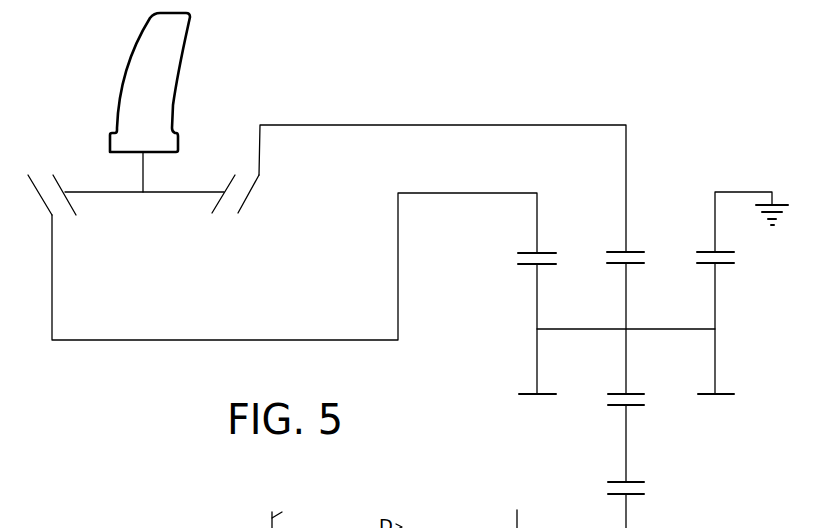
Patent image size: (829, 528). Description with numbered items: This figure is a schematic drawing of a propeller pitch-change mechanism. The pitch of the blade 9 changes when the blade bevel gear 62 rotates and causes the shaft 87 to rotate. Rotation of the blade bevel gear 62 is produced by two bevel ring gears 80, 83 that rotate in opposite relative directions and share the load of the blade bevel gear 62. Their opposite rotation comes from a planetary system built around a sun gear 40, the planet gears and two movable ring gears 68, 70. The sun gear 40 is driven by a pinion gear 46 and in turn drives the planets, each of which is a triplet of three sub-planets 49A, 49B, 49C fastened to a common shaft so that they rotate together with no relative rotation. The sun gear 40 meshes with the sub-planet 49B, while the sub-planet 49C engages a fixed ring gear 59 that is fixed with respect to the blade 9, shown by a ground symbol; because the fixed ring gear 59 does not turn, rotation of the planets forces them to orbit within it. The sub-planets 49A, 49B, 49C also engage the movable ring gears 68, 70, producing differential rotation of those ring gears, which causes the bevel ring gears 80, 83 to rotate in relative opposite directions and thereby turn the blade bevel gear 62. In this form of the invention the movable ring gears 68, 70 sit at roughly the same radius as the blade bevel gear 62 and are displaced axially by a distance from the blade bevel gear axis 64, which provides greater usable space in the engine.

The blade 9 is at (155, 92).
The shaft 87 is at (143, 173).
The blade bevel gear 62 is at (200, 192).
The bevel ring gear 80 is at (30, 178).
The bevel ring gear 83 is at (250, 189).
The movable ring gear 68 is at (545, 250).
The movable ring gear 70 is at (635, 250).
The fixed ring gear 59 is at (720, 252).
The sub-planet 49A is at (537, 297).
The sub-planet 49B is at (626, 297).
The sub-planet 49C is at (715, 297).
The sun gear 40 is at (626, 436).
The pinion gear 46 is at (626, 505).
The blade bevel gear axis 64 is at (283, 513).